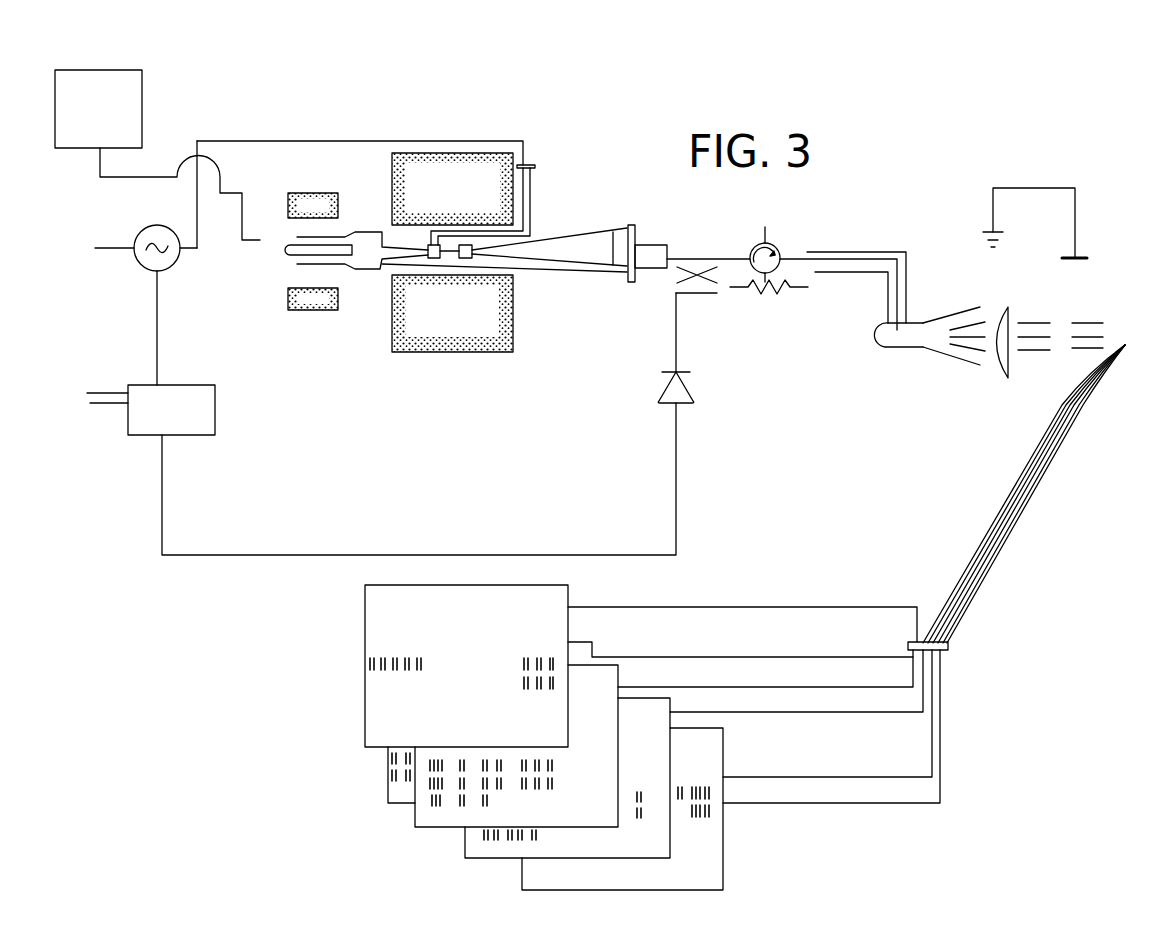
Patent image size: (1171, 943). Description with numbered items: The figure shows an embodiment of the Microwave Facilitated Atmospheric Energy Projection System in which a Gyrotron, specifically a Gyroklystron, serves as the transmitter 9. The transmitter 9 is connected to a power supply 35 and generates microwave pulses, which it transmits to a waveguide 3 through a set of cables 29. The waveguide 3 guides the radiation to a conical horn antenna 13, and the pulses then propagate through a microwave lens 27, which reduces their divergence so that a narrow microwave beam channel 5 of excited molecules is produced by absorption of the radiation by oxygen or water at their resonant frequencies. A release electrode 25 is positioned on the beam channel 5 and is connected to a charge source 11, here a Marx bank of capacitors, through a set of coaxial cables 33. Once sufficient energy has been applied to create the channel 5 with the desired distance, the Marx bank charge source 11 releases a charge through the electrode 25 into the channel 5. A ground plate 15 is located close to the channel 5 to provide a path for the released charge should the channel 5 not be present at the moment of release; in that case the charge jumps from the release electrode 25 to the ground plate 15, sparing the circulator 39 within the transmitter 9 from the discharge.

The waveguide 3 is at (913, 322).
The channel 5 is at (1057, 325).
The transmitter 9 is at (381, 133).
The charge source 11 is at (822, 605).
The antenna 13 is at (955, 310).
The ground plate 15 is at (1075, 208).
The release electrode 25 is at (1122, 349).
The microwave lens 27 is at (1003, 372).
The set of cables 29 is at (848, 250).
The set of coaxial cables 33 is at (1047, 462).
The power supply 35 is at (143, 97).
The circulator 39 is at (780, 252).